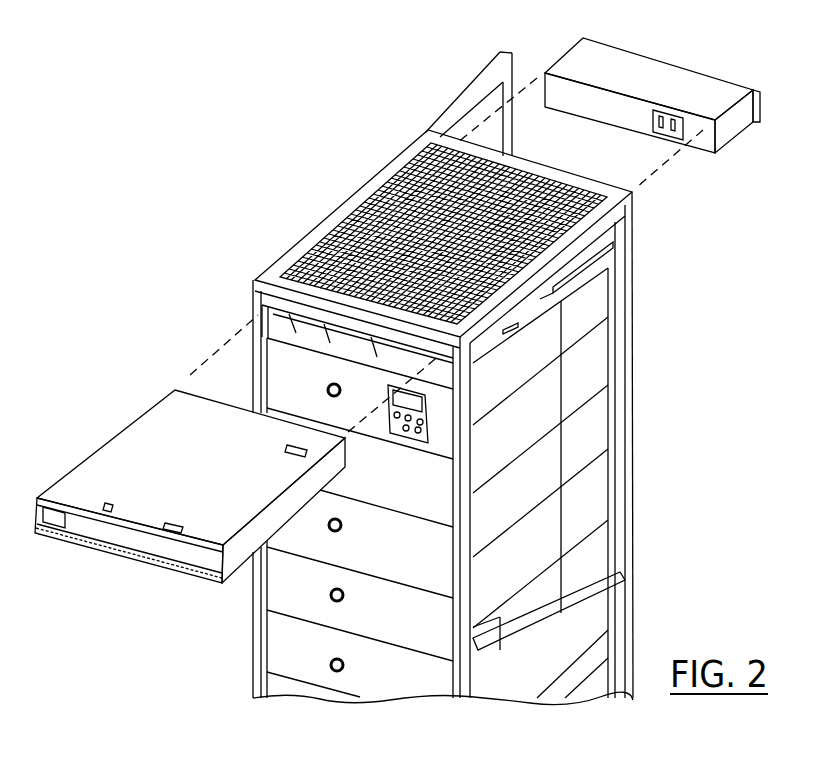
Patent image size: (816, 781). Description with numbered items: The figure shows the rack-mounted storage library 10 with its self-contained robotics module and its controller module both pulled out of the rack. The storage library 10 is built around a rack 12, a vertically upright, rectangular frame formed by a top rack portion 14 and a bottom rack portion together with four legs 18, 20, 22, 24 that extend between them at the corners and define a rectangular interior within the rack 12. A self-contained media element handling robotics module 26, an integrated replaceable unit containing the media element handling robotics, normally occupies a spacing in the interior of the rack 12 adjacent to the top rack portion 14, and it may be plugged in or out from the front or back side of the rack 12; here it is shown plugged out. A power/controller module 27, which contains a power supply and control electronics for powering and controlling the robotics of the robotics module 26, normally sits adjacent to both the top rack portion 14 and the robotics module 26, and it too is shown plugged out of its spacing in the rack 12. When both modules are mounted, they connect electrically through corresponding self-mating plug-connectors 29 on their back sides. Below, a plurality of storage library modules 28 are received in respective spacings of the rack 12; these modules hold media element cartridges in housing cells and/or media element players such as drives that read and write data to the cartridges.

The storage library 10 is at (448, 400).
The rack 12 is at (646, 377).
The top rack portion 14 is at (423, 219).
The leg 18 is at (260, 660).
The leg 20 is at (462, 683).
The leg 22 is at (630, 445).
The leg 24 is at (405, 177).
The self-contained media element handling robotics module 26 is at (128, 418).
The power/controller module 27 is at (608, 98).
The storage library modules 28 is at (298, 372).
The self-mating plug-connectors 29 is at (663, 133).